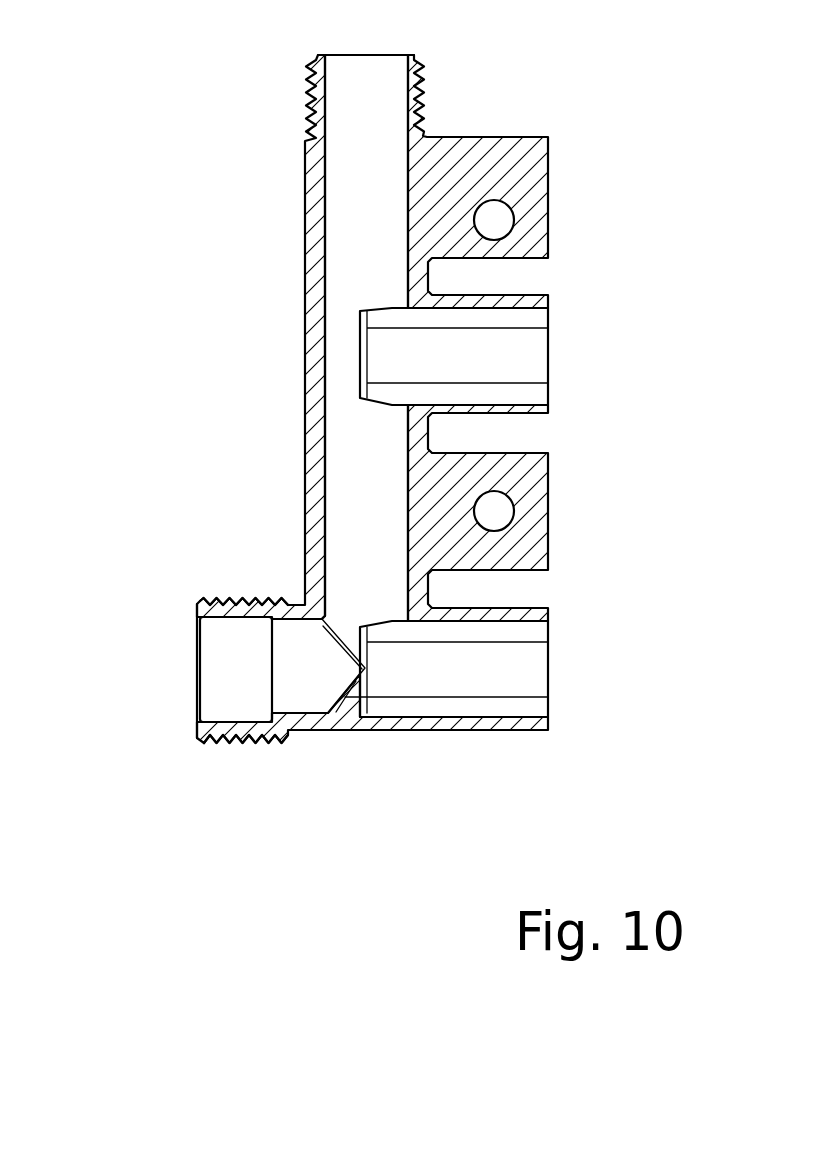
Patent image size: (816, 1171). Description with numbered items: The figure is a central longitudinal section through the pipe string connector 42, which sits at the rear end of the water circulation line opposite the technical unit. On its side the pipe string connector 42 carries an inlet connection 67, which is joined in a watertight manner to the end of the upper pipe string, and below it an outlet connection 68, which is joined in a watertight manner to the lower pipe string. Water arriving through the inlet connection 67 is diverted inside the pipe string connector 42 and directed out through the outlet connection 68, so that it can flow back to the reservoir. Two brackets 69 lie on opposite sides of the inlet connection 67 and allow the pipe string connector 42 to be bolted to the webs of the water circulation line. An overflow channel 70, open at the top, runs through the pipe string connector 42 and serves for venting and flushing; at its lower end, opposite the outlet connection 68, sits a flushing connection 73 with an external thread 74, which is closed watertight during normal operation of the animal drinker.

The pipe string connector 42 is at (641, 152).
The inlet connection 67 is at (530, 352).
The outlet connection 68 is at (538, 675).
The bracket 69 is at (508, 150).
The overflow channel 70 is at (353, 193).
The flushing connection 73 is at (217, 678).
The external thread 74 is at (243, 742).